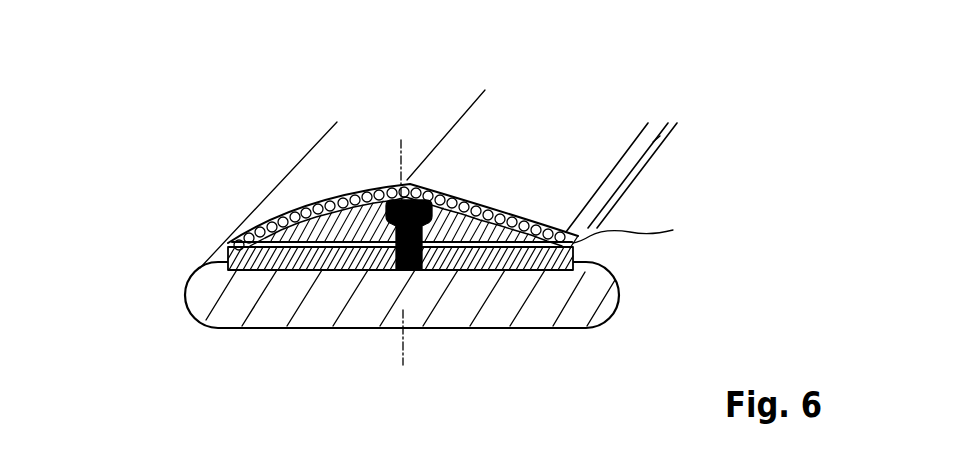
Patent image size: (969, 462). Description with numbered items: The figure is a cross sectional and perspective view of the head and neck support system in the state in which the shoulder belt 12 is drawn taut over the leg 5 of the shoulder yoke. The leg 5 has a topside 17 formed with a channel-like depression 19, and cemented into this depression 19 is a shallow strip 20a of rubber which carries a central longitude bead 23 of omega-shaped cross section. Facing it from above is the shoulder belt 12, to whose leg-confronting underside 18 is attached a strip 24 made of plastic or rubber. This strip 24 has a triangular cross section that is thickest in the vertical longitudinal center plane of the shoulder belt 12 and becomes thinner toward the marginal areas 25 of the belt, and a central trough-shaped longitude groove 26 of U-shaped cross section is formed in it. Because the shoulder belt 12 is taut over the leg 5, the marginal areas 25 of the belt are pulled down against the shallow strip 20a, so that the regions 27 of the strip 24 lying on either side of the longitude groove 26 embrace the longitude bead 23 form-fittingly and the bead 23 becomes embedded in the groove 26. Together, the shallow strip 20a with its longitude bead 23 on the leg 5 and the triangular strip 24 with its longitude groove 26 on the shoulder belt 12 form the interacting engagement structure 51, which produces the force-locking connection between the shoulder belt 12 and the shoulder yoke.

The leg 5 is at (206, 336).
The shoulder belt 12 is at (315, 184).
The topside 17 is at (613, 317).
The leg-confronting underside 18 is at (270, 210).
The channel-like depression 19 is at (535, 272).
The shallow strip 20a is at (283, 285).
The longitude bead 23 is at (408, 272).
The strip 24 is at (485, 214).
The marginal areas 25 is at (245, 228).
The longitude groove 26 is at (418, 187).
The regions 27 is at (338, 272).
The interacting engagement structure 51 is at (226, 259).